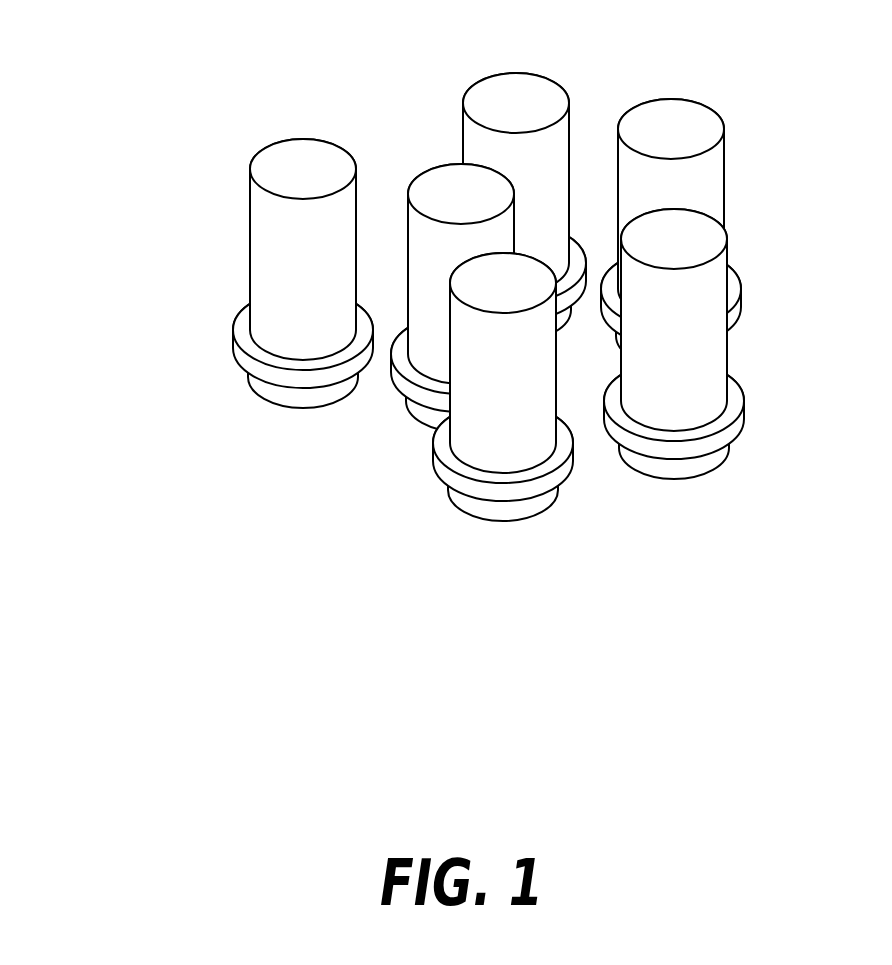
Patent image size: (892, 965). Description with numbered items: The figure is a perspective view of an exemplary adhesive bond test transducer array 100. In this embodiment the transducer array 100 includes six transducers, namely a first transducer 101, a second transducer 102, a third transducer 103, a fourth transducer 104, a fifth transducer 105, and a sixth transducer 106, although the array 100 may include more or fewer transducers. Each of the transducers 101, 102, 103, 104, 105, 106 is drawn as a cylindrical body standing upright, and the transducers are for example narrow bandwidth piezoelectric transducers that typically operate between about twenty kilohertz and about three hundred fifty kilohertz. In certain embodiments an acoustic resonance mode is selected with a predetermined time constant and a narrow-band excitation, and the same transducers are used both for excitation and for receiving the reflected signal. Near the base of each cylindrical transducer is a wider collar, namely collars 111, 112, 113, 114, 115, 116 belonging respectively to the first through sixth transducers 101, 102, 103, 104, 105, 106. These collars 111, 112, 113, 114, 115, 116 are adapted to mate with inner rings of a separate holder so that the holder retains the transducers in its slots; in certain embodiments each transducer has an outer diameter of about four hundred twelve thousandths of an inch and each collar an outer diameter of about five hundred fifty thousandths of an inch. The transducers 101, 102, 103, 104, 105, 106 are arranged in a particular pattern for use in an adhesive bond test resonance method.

The adhesive bond test transducer array 100 is at (436, 281).
The first transducer 101 is at (264, 253).
The second transducer 102 is at (523, 94).
The third transducer 103 is at (694, 130).
The fourth transducer 104 is at (712, 362).
The fifth transducer 105 is at (515, 450).
The sixth transducer 106 is at (437, 178).
The collar 111 is at (233, 338).
The collar 112 is at (576, 258).
The collar 113 is at (742, 305).
The collar 114 is at (744, 420).
The collar 115 is at (440, 470).
The collar 116 is at (400, 383).